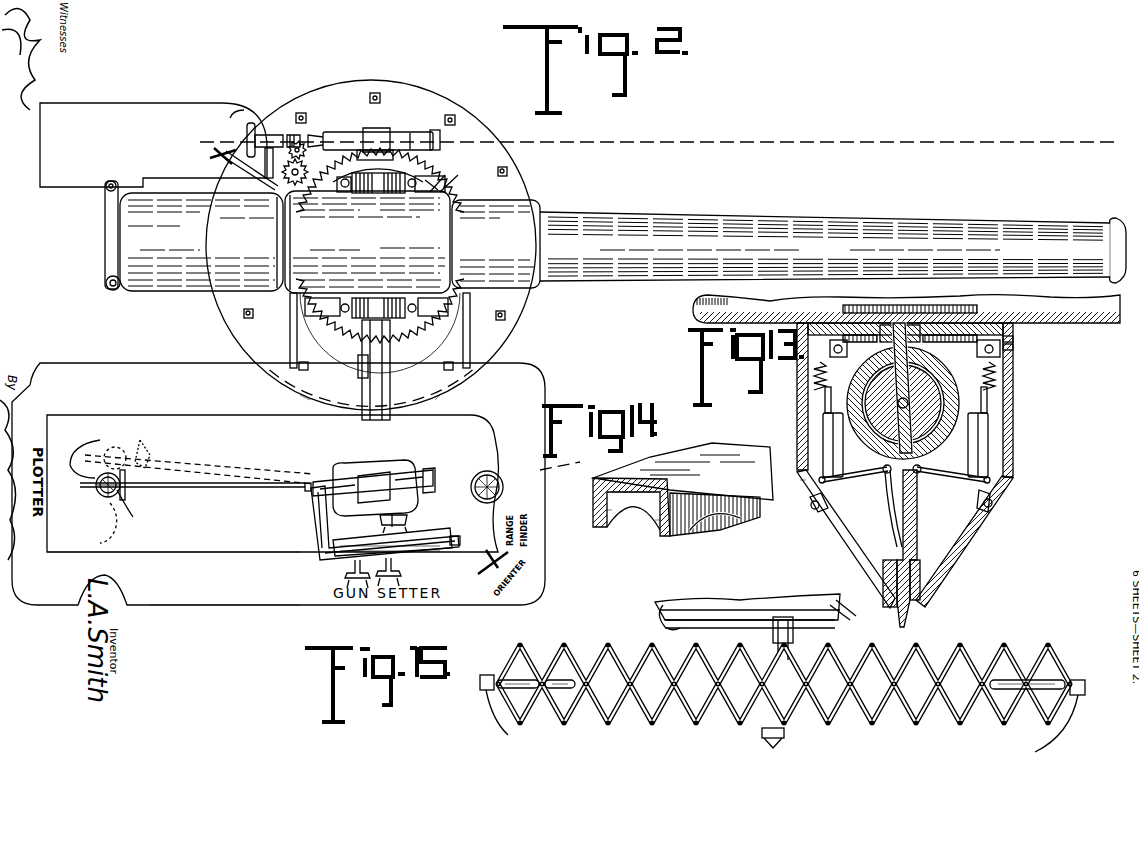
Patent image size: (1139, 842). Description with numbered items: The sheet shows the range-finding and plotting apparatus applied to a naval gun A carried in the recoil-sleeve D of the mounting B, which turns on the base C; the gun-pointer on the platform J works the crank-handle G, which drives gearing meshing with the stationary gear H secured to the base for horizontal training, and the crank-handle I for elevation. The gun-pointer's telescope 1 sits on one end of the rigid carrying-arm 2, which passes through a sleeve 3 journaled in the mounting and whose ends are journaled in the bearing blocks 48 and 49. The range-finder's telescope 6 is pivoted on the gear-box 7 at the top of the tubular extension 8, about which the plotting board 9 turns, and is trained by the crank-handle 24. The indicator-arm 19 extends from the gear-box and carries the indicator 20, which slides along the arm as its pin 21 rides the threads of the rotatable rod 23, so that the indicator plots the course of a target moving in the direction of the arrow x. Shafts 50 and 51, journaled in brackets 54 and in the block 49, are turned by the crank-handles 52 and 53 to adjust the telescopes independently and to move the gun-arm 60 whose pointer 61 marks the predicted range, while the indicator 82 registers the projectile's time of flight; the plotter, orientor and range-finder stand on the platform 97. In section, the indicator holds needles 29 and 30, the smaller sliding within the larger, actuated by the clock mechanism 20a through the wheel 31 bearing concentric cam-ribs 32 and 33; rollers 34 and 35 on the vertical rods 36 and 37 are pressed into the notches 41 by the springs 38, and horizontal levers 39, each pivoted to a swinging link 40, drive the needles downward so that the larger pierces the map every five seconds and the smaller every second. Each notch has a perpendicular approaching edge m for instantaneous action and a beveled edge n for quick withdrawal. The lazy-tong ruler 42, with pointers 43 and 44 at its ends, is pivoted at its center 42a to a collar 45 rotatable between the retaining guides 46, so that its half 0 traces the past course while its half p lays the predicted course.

In FIG. 2, the platform J is at (112, 115).
In FIG. 2, the crank-handle G is at (250, 122).
In FIG. 2, the crank-handle I is at (222, 148).
In FIG. 2, the tubular extension 8 is at (306, 150).
In FIG. 2, the gun-pointer's telescope 1 is at (398, 136).
In FIG. 2, the bearing block 48 is at (440, 170).
In FIG. 2, the stationary gear H is at (460, 178).
In FIG. 2, the recoil-sleeve D is at (390, 222).
In FIG. 2, the mounting B is at (348, 178).
In FIG. 2, the base C is at (355, 97).
In FIG. 2, the naval gun A is at (656, 226).
In FIG. 2, the arrow x is at (1114, 200).
In FIG. 2, the bearing block 49 is at (418, 326).
In FIG. 2, the carrying-arm 2 is at (360, 386).
In FIG. 2, the brackets 54 is at (388, 362).
In FIG. 2, the shaft 50 is at (345, 404).
In FIG. 2, the shaft 51 is at (410, 405).
In FIG. 2, the sleeve 3 is at (104, 452).
In FIG. 2, the pointer 61 is at (138, 455).
In FIG. 2, the indicator-arm 19 is at (227, 470).
In FIG. 13, the indicator-arm 19 is at (936, 430).
In FIG. 2, the gun-arm 60 is at (251, 461).
In FIG. 2, the clock mechanism 20a is at (128, 516).
In FIG. 2, the indicator 82 is at (305, 495).
In FIG. 2, the range-finder's telescope 6 is at (420, 476).
In FIG. 2, the gear-box 7 is at (418, 505).
In FIG. 2, the crank-handle 24 is at (402, 525).
In FIG. 2, the crank-handle 52 is at (345, 580).
In FIG. 2, the crank-handle 53 is at (405, 582).
In FIG. 2, the plotting board 9 is at (240, 545).
In FIG. 2, the platform 97 is at (215, 595).
In FIG. 13, the notches 41 is at (908, 312).
In FIG. 14, the notches 41 is at (645, 520).
In FIG. 13, the wheel 31 is at (982, 322).
In FIG. 14, the wheel 31 is at (678, 462).
In FIG. 13, the cam-rib 32 is at (1013, 338).
In FIG. 14, the cam-rib 32 is at (672, 530).
In FIG. 13, the roller 34 is at (1013, 347).
In FIG. 13, the indicator 20 is at (1095, 323).
In FIG. 15, the indicator 20 is at (706, 606).
In FIG. 13, the roller 35 is at (849, 350).
In FIG. 13, the cam-rib 33 is at (973, 350).
In FIG. 14, the cam-rib 33 is at (598, 527).
In FIG. 13, the springs 38 is at (904, 376).
In FIG. 13, the vertical rod 37 is at (820, 428).
In FIG. 13, the vertical rod 36 is at (990, 437).
In FIG. 13, the threaded rod 23 is at (880, 432).
In FIG. 13, the pin 21 is at (922, 442).
In FIG. 13, the swinging link 40 is at (822, 478).
In FIG. 13, the horizontal levers 39 is at (955, 480).
In FIG. 13, the retaining guides 46 is at (995, 496).
In FIG. 15, the retaining guides 46 is at (660, 615).
In FIG. 13, the collar 45 is at (812, 509).
In FIG. 15, the collar 45 is at (852, 625).
In FIG. 13, the needle 30 is at (893, 508).
In FIG. 15, the needle 30 is at (795, 742).
In FIG. 13, the needle 29 is at (918, 515).
In FIG. 15, the needle 29 is at (762, 737).
In FIG. 14, the approaching edge m is at (615, 506).
In FIG. 14, the beveled edge n is at (660, 525).
In FIG. 15, the pivot 42a is at (780, 617).
In FIG. 15, the ruler 42 is at (615, 660).
In FIG. 15, the pointer 43 is at (488, 714).
In FIG. 15, the half of ruler 0 is at (625, 728).
In FIG. 15, the half of ruler p is at (965, 724).
In FIG. 15, the pointer 44 is at (1066, 740).